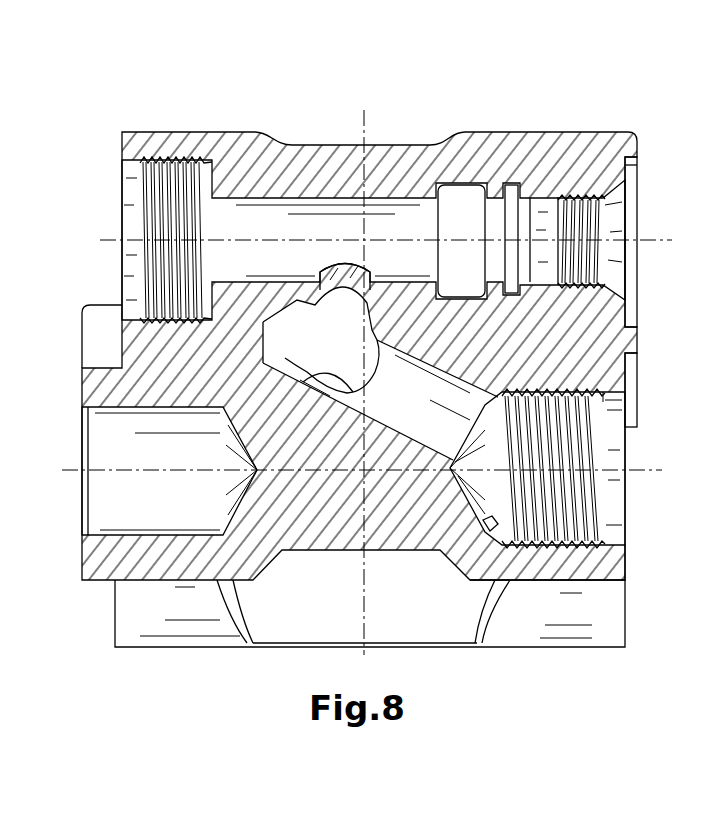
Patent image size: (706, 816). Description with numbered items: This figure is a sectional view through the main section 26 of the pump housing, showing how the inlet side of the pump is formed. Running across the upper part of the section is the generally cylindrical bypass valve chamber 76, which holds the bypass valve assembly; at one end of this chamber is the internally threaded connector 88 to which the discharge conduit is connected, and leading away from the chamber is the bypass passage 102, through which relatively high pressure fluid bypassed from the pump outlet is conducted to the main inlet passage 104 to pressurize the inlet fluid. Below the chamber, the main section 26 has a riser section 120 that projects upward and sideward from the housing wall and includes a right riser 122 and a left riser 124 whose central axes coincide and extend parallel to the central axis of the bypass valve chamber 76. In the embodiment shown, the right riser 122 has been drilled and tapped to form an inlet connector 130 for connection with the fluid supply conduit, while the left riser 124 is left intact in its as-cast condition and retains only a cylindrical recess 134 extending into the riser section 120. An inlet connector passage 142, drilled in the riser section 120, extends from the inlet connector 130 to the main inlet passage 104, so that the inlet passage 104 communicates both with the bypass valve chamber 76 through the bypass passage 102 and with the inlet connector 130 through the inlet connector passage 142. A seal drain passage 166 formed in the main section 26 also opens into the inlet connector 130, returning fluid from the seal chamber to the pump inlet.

The main section 26 is at (128, 128).
The bypass valve chamber 76 is at (242, 212).
The internally threaded connector 88 is at (653, 195).
The bypass passage 102 is at (357, 263).
The inlet passage 104 is at (303, 335).
The riser section 120 is at (76, 370).
The right riser 122 is at (610, 563).
The left riser 124 is at (82, 567).
The inlet connector 130 is at (567, 435).
The cylindrical recess 134 is at (123, 443).
The inlet connector passage 142 is at (420, 403).
The passage 166 is at (522, 535).